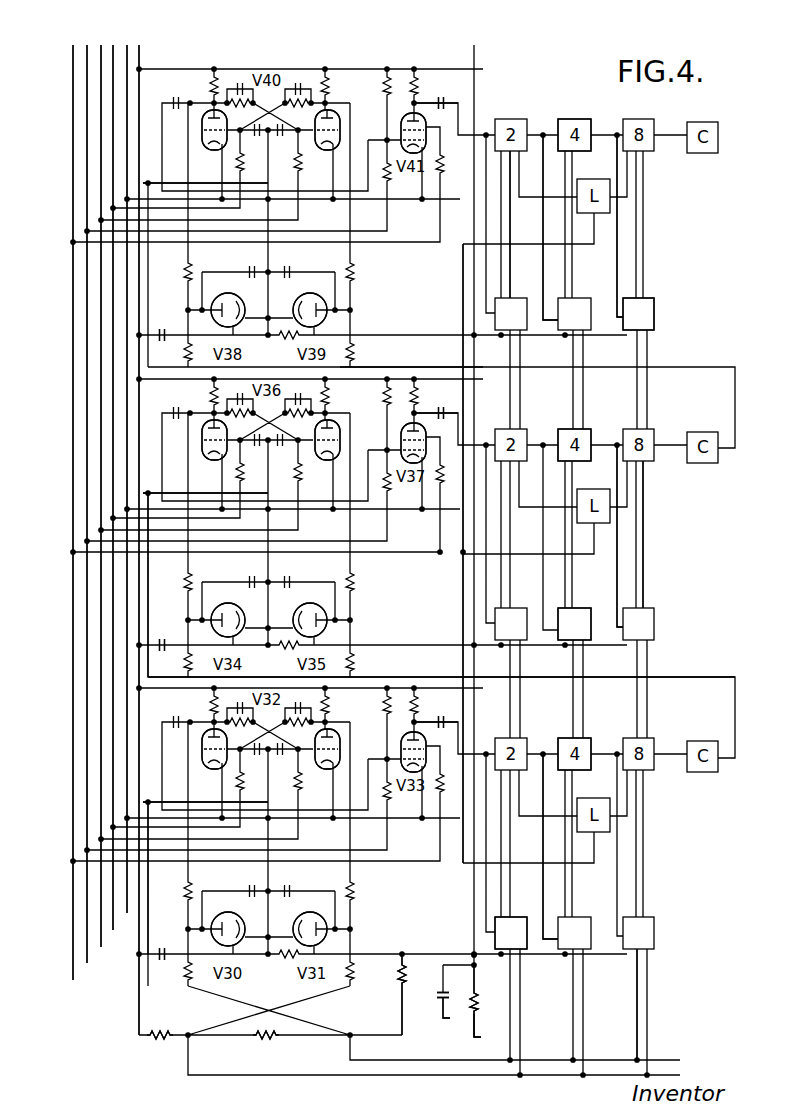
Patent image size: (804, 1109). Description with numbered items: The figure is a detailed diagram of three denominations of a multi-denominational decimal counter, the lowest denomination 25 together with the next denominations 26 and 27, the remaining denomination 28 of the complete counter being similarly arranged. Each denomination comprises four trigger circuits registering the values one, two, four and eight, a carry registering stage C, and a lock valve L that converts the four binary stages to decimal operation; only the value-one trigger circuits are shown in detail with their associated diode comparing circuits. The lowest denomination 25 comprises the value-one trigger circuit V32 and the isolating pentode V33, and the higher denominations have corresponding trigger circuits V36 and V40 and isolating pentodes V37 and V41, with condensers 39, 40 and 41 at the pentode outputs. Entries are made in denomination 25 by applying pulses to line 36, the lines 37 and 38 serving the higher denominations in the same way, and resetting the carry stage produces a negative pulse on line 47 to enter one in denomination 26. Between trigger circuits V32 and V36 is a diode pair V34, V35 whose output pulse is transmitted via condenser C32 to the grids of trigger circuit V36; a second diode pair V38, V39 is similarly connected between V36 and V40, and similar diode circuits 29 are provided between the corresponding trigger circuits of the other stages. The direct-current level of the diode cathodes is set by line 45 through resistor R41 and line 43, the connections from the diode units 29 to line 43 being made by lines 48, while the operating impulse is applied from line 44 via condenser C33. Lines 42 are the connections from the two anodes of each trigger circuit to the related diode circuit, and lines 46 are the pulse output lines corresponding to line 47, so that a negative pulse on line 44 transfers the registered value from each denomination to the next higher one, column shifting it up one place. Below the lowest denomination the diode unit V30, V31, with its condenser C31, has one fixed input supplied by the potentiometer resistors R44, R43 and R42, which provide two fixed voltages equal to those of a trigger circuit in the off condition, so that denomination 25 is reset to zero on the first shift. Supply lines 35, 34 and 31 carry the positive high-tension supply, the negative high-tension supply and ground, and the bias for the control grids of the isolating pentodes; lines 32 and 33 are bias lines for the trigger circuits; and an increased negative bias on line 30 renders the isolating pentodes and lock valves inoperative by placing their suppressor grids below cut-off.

The lowest denomination 25 is at (564, 746).
The denomination 26 is at (589, 461).
The denomination 27 is at (579, 119).
The denomination 28 is at (525, 957).
The diode circuits 29 is at (654, 312).
The line 30 is at (67, 525).
The supply line 31 is at (82, 513).
The supply line 32 is at (97, 502).
The supply line 33 is at (112, 488).
The supply line 34 is at (121, 479).
The supply line 35 is at (139, 968).
The line 36 is at (144, 802).
The trigger input line 37 is at (144, 493).
The trigger input line 38 is at (144, 183).
The coupling capacitor 39 is at (448, 708).
The coupling capacitor 40 is at (448, 398).
The coupling capacitor 41 is at (462, 90).
The lines 42 is at (506, 254).
The line 43 is at (463, 586).
The line 44 is at (456, 1015).
The line 45 is at (489, 1025).
The pulse output lines 46 is at (531, 308).
The line 47 is at (152, 578).
The lines 48 is at (380, 370).
The resistor R41 is at (474, 990).
The potentiometer resistor R42 is at (407, 987).
The potentiometer resistor R43 is at (263, 1038).
The potentiometer resistor R44 is at (180, 1034).
The capacitor C31 is at (172, 932).
The condenser C32 is at (172, 632).
The condenser C33 is at (172, 321).
The diode V30 is at (235, 954).
The diode V31 is at (315, 954).
The value 1 trigger circuit V32 is at (271, 730).
The isolating pentode V33 is at (408, 771).
The diode V34 is at (235, 645).
The diode V35 is at (315, 645).
The trigger circuit V36 is at (271, 421).
The pentode V37 is at (408, 462).
The flip-flop tube V38 is at (235, 335).
The flip-flop tube V39 is at (315, 335).
The trigger circuit V40 is at (271, 111).
The pentode V41 is at (408, 152).